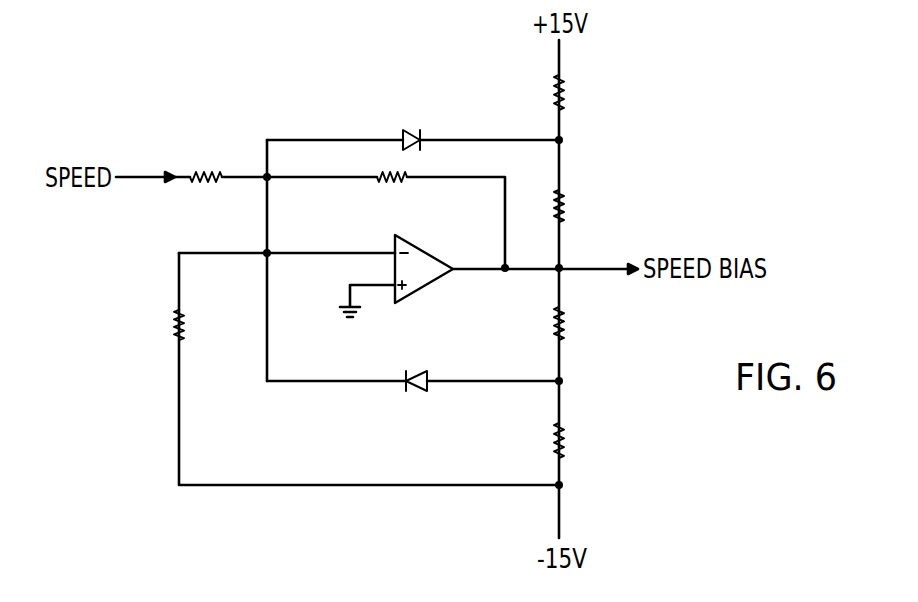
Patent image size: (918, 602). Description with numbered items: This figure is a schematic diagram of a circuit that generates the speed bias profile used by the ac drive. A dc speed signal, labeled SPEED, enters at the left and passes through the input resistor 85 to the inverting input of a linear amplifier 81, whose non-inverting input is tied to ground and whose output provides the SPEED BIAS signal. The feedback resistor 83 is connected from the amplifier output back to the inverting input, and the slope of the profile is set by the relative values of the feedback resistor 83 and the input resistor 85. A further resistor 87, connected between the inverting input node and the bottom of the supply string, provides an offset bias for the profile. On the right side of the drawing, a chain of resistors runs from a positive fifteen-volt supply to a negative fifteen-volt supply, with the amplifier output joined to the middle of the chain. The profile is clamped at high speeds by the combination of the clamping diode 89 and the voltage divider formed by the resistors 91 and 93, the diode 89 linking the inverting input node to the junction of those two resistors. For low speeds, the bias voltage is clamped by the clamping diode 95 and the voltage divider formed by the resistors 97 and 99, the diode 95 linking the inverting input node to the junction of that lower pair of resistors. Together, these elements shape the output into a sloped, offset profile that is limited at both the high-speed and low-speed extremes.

The linear amplifier 81 is at (445, 233).
The feedback resistor 83 is at (385, 172).
The input resistor 85 is at (200, 170).
The resistor 87 is at (188, 323).
The clamping diode 89 is at (411, 128).
The resistor 91 is at (553, 90).
The resistor 93 is at (555, 205).
The clamping diode 95 is at (412, 371).
The resistor 97 is at (554, 322).
The resistor 99 is at (554, 438).